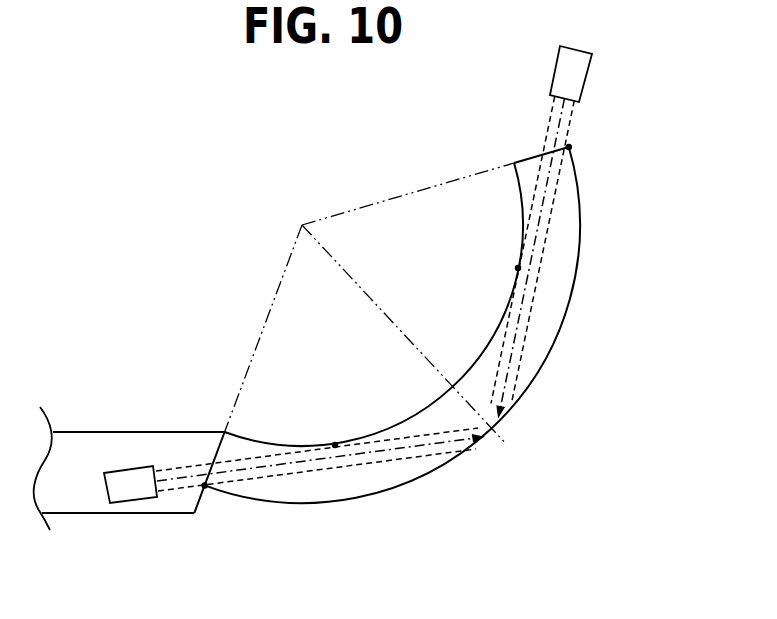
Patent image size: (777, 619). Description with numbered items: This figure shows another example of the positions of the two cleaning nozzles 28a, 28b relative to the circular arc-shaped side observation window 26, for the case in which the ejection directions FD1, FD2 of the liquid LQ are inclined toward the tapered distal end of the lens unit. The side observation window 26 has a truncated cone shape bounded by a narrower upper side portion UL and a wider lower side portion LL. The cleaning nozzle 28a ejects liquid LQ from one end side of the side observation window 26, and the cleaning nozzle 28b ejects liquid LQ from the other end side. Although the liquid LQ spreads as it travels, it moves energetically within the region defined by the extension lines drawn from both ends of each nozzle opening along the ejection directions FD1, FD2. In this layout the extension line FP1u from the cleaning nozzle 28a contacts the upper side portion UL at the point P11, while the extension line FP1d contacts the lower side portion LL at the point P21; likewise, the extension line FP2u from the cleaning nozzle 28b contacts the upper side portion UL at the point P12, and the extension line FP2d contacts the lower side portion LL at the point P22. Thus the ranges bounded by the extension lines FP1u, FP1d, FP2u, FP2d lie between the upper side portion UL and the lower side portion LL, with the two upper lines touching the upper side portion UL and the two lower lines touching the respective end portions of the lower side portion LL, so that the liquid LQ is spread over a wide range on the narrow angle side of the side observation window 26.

The side observation window 26 is at (426, 363).
The cleaning nozzle 28a is at (123, 467).
The cleaning nozzle 28b is at (553, 68).
The upper side portion UL is at (522, 198).
The lower side portion LL is at (580, 207).
The liquid LQ is at (318, 484).
The extension line FP1u is at (395, 425).
The extension line FP1d is at (383, 458).
The extension line FP2u is at (505, 333).
The extension line FP2d is at (530, 318).
The point P11 is at (335, 445).
The point P12 is at (518, 268).
The point P21 is at (205, 486).
The point P22 is at (570, 147).
The ejection direction FD1 is at (478, 455).
The ejection direction FD2 is at (520, 392).